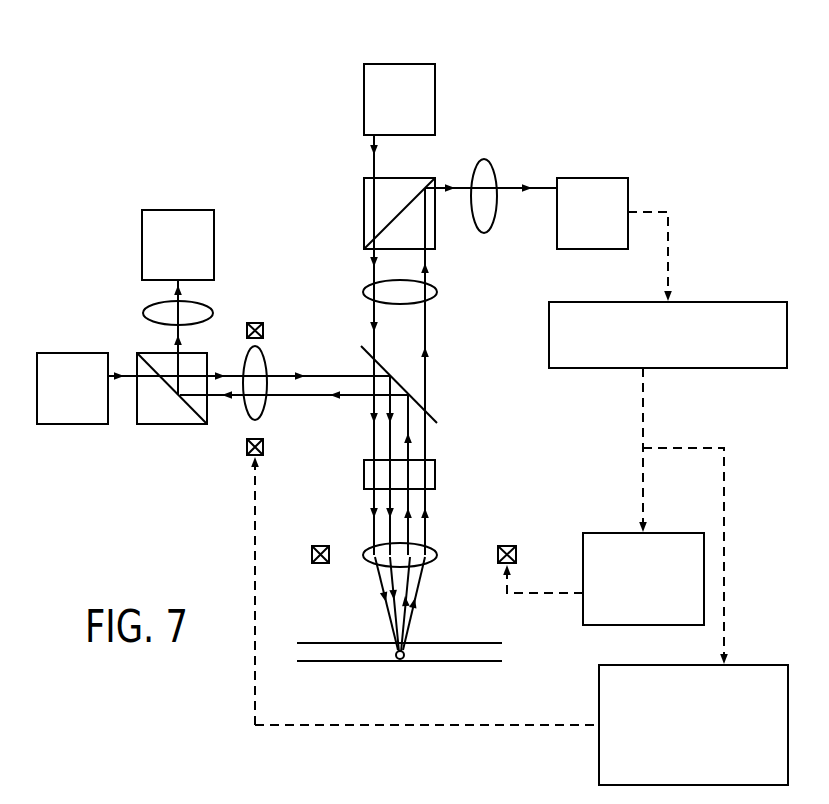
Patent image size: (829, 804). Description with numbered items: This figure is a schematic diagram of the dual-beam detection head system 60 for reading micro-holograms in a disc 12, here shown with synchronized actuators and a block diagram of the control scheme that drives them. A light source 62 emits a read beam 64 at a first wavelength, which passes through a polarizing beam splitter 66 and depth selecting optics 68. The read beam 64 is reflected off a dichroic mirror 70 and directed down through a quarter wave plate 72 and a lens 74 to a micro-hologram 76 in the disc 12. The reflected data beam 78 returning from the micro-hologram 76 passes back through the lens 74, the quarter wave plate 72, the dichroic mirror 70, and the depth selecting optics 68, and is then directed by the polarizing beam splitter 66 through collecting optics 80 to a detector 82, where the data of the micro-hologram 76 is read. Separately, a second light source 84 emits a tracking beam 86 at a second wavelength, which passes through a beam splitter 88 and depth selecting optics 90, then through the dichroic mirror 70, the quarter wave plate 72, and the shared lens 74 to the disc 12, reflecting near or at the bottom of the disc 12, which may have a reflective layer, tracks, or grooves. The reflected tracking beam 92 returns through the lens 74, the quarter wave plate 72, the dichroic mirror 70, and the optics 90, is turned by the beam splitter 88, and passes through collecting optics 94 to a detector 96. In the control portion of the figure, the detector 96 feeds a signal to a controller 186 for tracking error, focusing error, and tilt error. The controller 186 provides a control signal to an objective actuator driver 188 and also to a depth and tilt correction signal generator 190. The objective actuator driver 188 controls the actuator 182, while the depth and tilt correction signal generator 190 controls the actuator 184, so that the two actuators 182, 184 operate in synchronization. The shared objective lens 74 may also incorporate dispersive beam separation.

The dual-beam detection head system 60 is at (210, 37).
The disc 12 is at (482, 650).
The light source 62 is at (75, 353).
The read beam 64 is at (128, 375).
The polarizing beam splitter 66 is at (172, 424).
The depth selecting optics 68 is at (264, 401).
The dichroic mirror 70 is at (403, 384).
The quarter wave plate 72 is at (436, 472).
The lens 74 is at (437, 555).
The micro-hologram 76 is at (402, 660).
The reflected data beam 78 is at (410, 579).
The collecting optics 80 is at (206, 305).
The detector 82 is at (178, 210).
The light source 84 is at (436, 85).
The tracking beam 86 is at (374, 165).
The beam splitter 88 is at (364, 215).
The depth selecting optics 90 is at (437, 292).
The reflected tracking beam 92 is at (413, 616).
The collecting optics 94 is at (486, 160).
The detector 96 is at (592, 178).
The actuator 182 is at (322, 565).
The actuator 184 is at (263, 330).
The controller 186 is at (722, 302).
The objective actuator driver 188 is at (606, 533).
The depth and tilt correction signal generator 190 is at (599, 745).